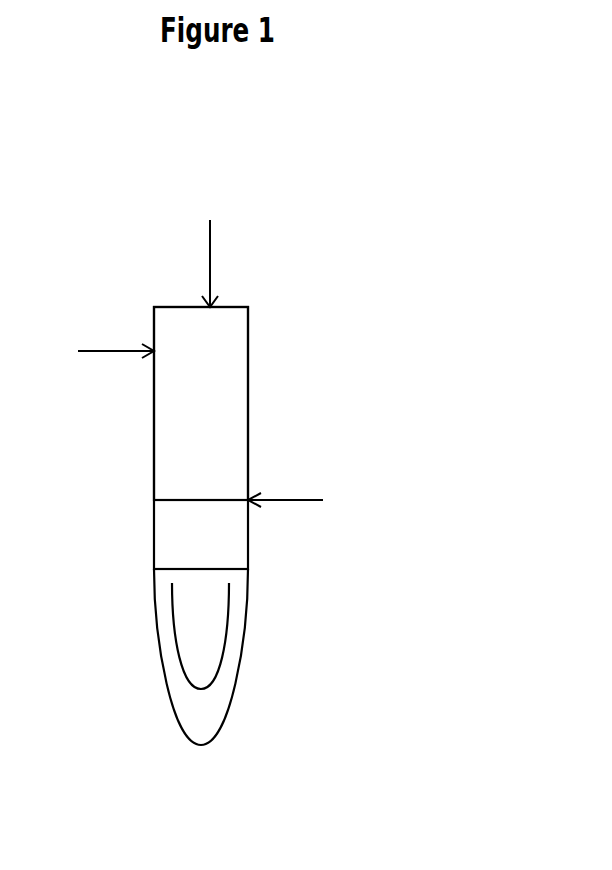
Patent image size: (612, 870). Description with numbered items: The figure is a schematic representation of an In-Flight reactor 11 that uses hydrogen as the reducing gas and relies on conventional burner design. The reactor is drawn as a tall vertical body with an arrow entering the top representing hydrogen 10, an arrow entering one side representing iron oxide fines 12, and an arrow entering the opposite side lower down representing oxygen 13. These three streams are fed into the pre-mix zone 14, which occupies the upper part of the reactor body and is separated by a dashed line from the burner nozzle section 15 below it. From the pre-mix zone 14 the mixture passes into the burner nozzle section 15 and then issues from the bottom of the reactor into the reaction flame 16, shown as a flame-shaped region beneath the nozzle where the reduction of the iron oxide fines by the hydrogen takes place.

The hydrogen 10 is at (234, 263).
The In-Flight reactor 11 is at (267, 403).
The iron oxide fines 12 is at (116, 339).
The oxygen 13 is at (285, 484).
The pre-mix zone 14 is at (201, 403).
The burner nozzle section 15 is at (201, 534).
The reaction flame 16 is at (201, 657).